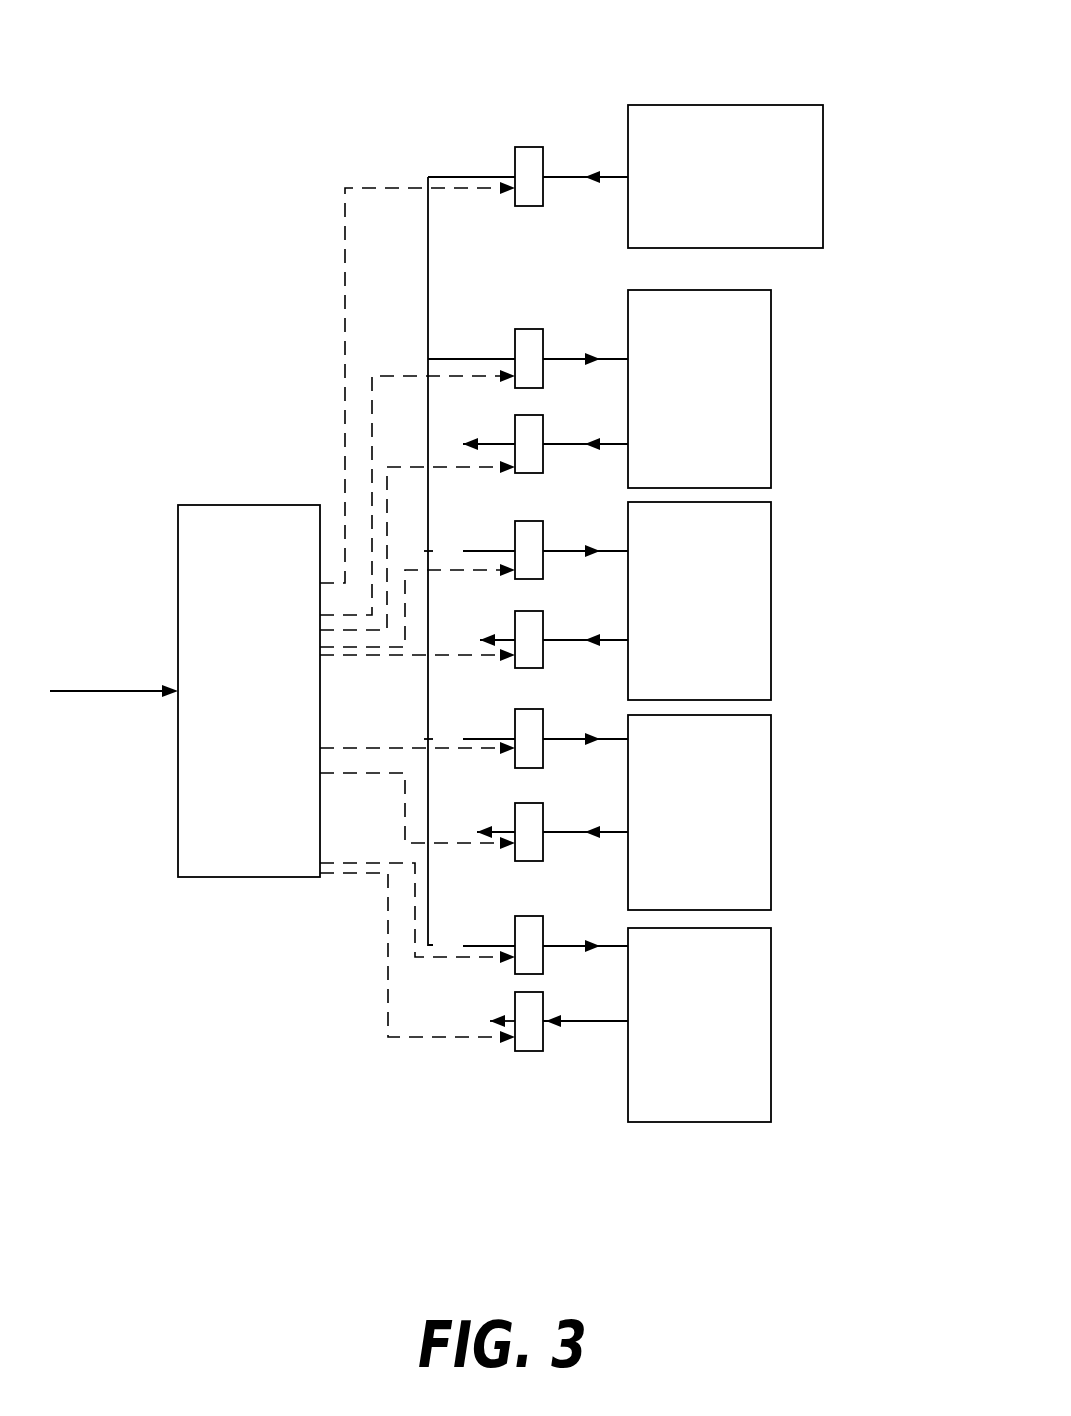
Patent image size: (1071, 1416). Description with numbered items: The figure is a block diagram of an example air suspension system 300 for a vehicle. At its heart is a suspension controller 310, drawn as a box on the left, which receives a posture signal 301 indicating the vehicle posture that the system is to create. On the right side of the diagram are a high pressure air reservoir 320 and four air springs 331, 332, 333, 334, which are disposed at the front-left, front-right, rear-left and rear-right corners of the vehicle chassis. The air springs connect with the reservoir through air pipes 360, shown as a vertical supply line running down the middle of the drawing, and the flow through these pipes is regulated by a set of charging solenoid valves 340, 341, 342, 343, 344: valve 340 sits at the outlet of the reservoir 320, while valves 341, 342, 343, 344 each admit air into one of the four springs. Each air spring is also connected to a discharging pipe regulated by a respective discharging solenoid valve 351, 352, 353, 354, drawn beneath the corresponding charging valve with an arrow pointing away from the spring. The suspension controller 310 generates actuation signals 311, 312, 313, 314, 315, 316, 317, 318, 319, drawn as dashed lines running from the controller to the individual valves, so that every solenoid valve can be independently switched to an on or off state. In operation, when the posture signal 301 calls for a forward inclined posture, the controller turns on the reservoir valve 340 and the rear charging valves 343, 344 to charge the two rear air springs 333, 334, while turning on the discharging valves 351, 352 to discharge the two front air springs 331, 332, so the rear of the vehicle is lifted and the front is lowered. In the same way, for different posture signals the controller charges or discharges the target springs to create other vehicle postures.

The air suspension system 300 is at (862, 32).
The posture signal 301 is at (118, 693).
The suspension controller 310 is at (243, 503).
The actuation signal 311 is at (463, 191).
The actuation signal 312 is at (462, 377).
The actuation signal 313 is at (452, 481).
The actuation signal 314 is at (455, 572).
The actuation signal 315 is at (446, 678).
The actuation signal 316 is at (453, 763).
The actuation signal 317 is at (453, 858).
The actuation signal 318 is at (455, 960).
The actuation signal 319 is at (441, 1066).
The high pressure air reservoir 320 is at (823, 162).
The front-left air spring 331 is at (771, 383).
The front-right air spring 332 is at (771, 596).
The rear-left air spring 333 is at (771, 809).
The rear-right air spring 334 is at (771, 1016).
The charging solenoid valve 340 is at (532, 147).
The charging solenoid valve 341 is at (532, 308).
The charging solenoid valve 342 is at (538, 521).
The charging solenoid valve 343 is at (538, 709).
The charging solenoid valve 344 is at (538, 916).
The discharging solenoid valve 351 is at (538, 415).
The discharging solenoid valve 352 is at (538, 611).
The discharging solenoid valve 353 is at (538, 803).
The discharging solenoid valve 354 is at (538, 993).
The air pipes 360 is at (447, 176).